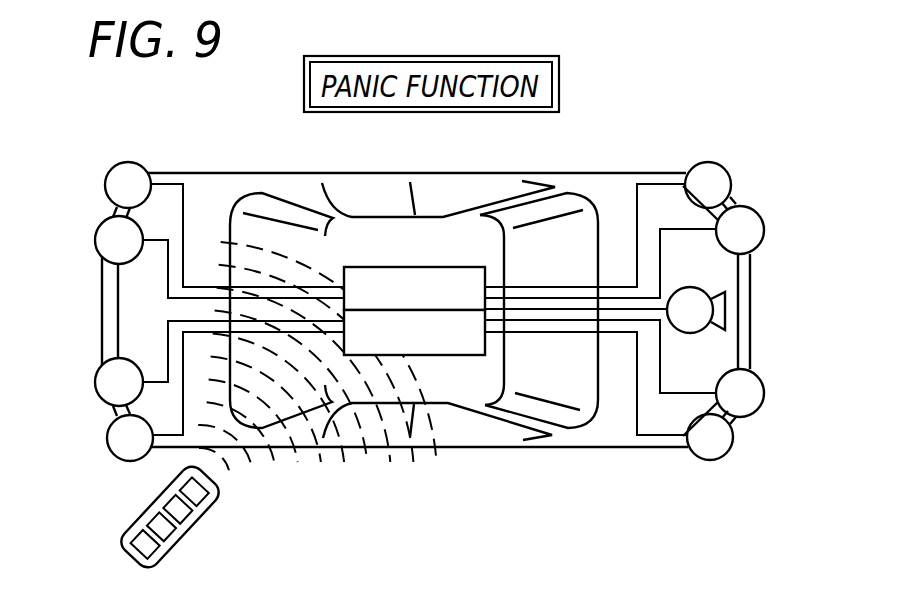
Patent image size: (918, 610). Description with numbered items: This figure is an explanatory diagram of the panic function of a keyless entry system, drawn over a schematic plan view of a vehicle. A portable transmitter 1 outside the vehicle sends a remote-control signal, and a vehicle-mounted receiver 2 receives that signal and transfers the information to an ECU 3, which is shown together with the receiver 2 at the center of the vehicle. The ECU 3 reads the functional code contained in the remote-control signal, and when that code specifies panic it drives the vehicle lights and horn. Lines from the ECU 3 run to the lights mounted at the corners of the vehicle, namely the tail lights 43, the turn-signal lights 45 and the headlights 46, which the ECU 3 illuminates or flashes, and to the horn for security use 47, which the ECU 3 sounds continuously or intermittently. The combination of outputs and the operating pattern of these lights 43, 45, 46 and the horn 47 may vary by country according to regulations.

The transmitter 1 is at (186, 538).
The receiver 2 is at (414, 332).
The ECU 3 is at (414, 288).
The tail lights 43 is at (96, 240).
The turn-signal lights 45 is at (105, 181).
The headlights 46 is at (764, 222).
The horn for security use 47 is at (745, 305).